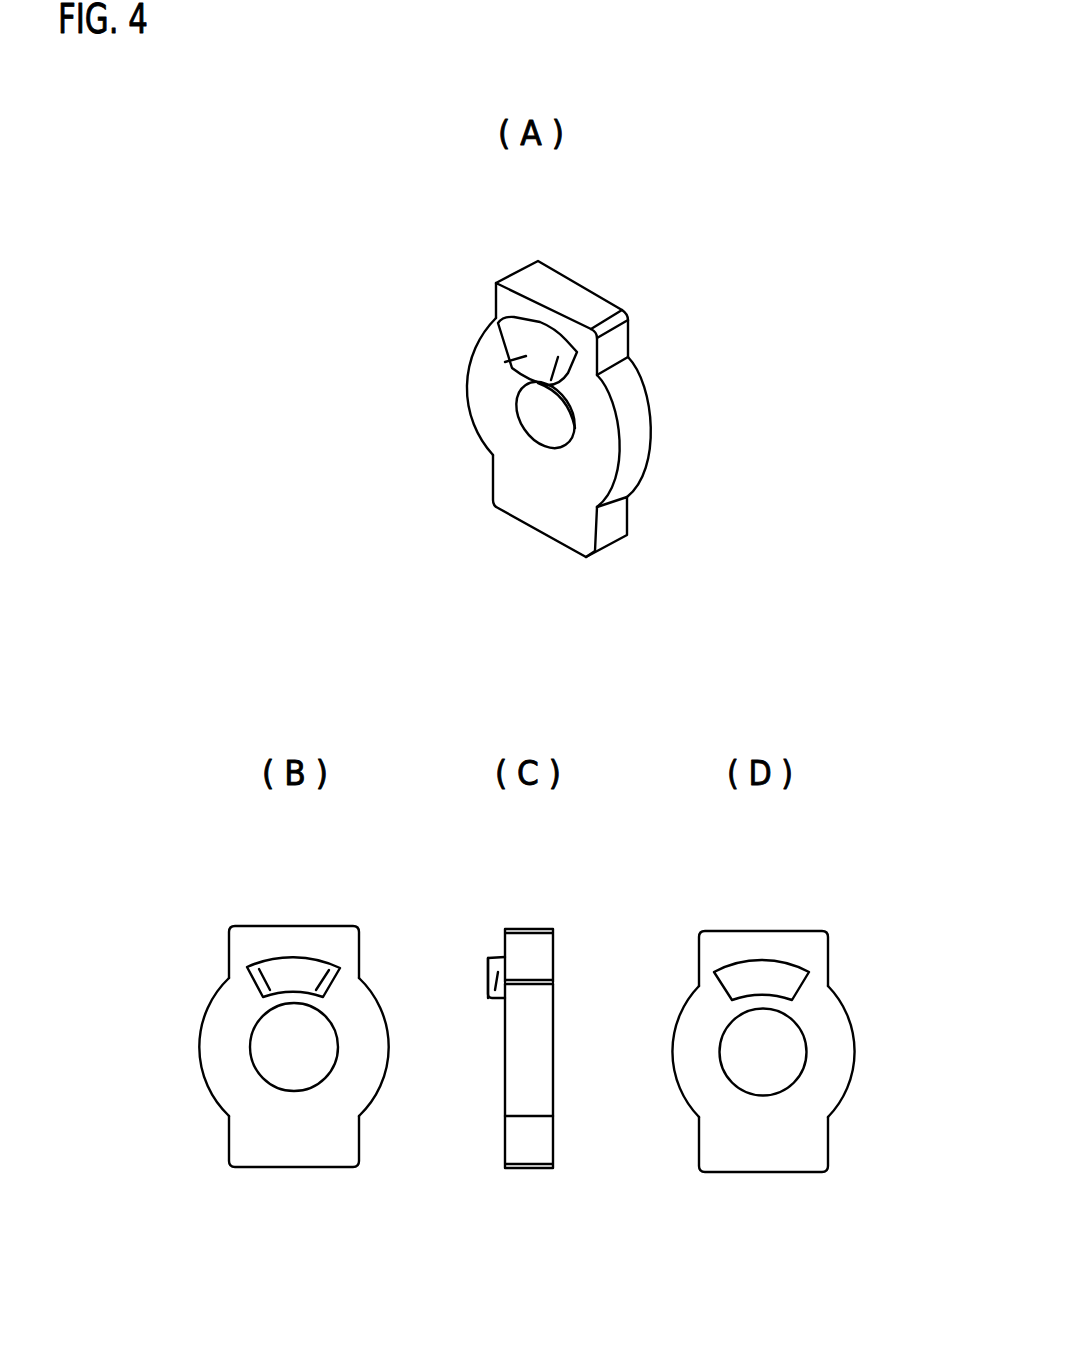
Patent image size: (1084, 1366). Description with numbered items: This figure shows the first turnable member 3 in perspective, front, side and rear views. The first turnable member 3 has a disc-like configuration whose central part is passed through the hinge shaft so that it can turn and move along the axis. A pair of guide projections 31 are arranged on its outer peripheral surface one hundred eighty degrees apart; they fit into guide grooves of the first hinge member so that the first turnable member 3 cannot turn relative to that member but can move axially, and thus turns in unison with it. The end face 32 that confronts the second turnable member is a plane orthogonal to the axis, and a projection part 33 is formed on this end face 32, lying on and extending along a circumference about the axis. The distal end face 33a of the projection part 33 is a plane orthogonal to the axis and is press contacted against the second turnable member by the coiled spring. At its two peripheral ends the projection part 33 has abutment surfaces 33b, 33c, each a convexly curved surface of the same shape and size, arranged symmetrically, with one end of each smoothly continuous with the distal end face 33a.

The first turnable member 3 is at (523, 717).
The guide projection 31 is at (575, 281).
The end face 32 is at (540, 467).
The projection part 33 is at (478, 629).
The distal end face 33a is at (524, 353).
The abutment surface 33b is at (566, 374).
The abutment surface 33c is at (508, 345).